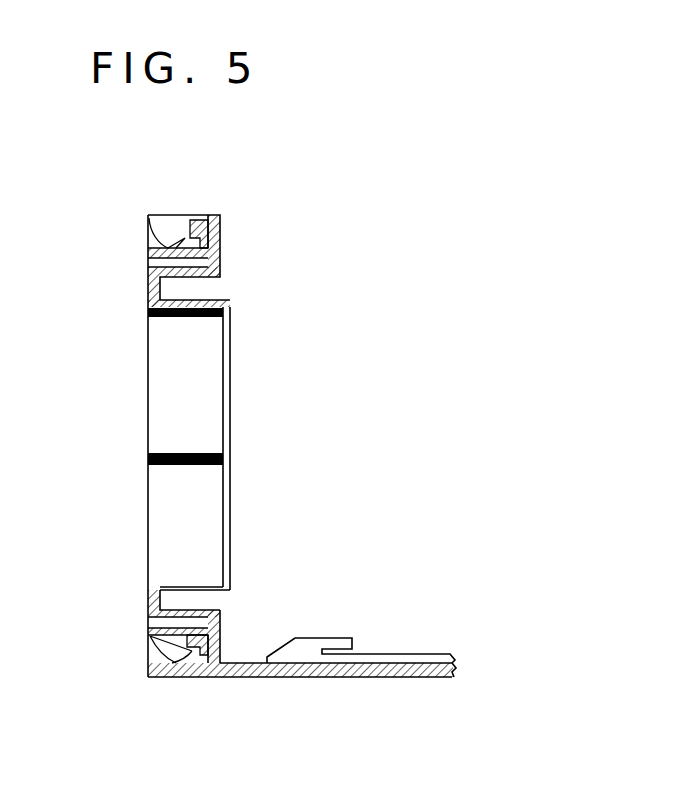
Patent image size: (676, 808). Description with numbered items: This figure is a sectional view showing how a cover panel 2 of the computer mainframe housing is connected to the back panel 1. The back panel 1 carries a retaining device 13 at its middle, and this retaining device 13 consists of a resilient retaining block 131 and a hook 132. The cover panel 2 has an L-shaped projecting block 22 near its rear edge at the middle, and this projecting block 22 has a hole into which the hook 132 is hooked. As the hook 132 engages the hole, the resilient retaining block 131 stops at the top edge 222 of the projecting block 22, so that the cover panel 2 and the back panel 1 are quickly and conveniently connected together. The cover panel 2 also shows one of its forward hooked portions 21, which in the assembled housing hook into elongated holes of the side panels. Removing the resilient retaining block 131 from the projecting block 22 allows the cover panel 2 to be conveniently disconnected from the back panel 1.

The back panel 1 is at (148, 441).
The cover panel 2 is at (303, 678).
The retaining device 13 is at (238, 208).
The resilient retaining block 131 is at (147, 217).
The hook 132 is at (200, 216).
The hooked portion 21 is at (338, 640).
The L-shaped projecting block 22 is at (214, 652).
The top edge 222 is at (220, 617).